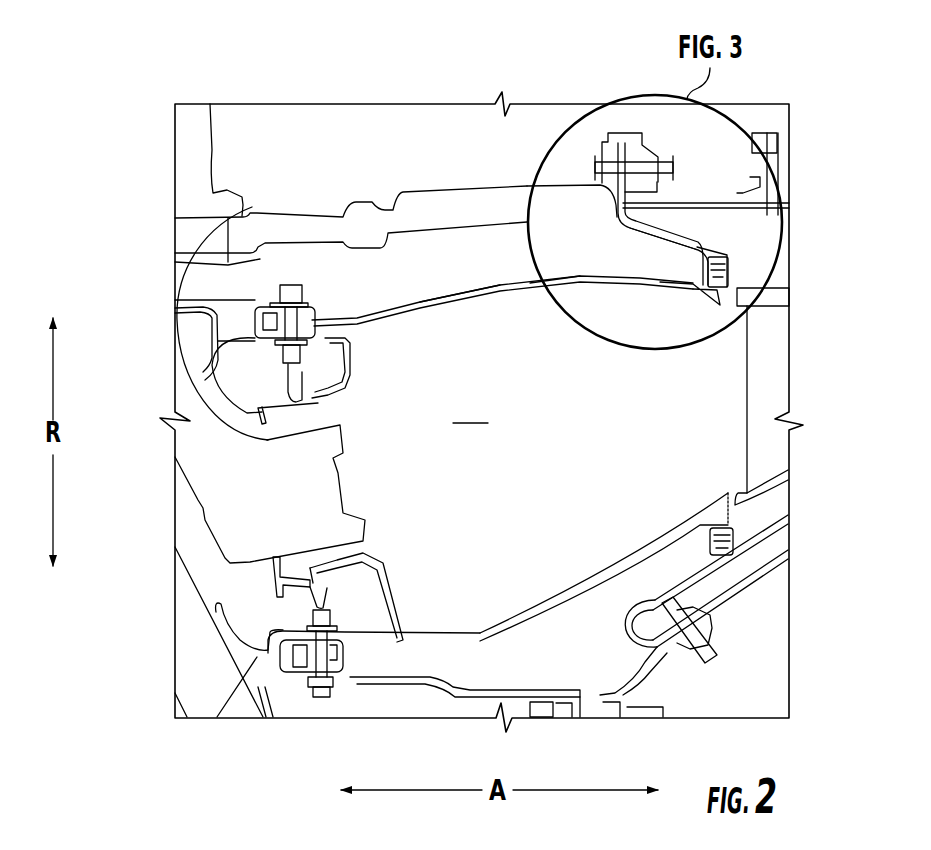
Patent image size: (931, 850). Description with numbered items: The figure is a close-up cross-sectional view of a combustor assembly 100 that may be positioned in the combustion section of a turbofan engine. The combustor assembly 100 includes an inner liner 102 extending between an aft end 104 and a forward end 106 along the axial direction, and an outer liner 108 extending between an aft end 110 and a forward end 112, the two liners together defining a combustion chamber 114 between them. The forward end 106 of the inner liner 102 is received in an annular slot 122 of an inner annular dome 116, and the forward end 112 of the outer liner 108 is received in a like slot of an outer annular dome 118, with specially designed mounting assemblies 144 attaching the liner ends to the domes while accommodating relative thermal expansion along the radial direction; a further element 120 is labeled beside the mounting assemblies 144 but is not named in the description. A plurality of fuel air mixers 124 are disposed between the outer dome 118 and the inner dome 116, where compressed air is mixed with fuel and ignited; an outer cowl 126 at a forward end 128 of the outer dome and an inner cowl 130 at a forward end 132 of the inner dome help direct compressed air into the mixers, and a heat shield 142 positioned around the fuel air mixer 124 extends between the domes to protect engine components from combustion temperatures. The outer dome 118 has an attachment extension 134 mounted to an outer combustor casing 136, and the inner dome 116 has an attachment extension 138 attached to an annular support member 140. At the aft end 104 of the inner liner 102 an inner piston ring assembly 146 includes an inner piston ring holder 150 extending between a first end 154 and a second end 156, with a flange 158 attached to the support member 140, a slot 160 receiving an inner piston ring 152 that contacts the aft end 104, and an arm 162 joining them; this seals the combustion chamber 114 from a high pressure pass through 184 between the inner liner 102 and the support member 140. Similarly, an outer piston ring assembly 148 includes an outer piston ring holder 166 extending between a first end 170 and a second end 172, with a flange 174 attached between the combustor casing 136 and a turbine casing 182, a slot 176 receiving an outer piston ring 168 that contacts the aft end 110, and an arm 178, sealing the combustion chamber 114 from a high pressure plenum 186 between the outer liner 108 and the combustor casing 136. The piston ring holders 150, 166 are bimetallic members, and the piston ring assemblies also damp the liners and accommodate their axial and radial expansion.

The combustor assembly 100 is at (447, 246).
The inner liner 102 is at (530, 617).
The aft end 104 is at (693, 489).
The forward end 106 is at (301, 670).
The outer liner 108 is at (560, 290).
The aft end 110 is at (697, 312).
The forward end 112 is at (258, 301).
The combustion chamber 114 is at (470, 409).
The inner annular dome 116 is at (227, 635).
The outer annular dome 118 is at (220, 341).
The bracket body 120 is at (318, 322).
The annular slot 122 is at (295, 312).
The fuel air mixer 124 is at (223, 507).
The outer cowl 126 is at (213, 377).
The forward end 128 is at (192, 331).
The inner cowl 130 is at (226, 638).
The forward end 132 is at (207, 667).
The attachment extension 134 is at (190, 305).
The outer combustor casing 136 is at (358, 216).
The attachment extension 138 is at (452, 686).
The annular support member 140 is at (647, 683).
The heat shield 142 is at (350, 370).
The mounting assembly 144 is at (292, 281).
The inner piston ring assembly 146 is at (711, 583).
The outer piston ring assembly 148 is at (576, 236).
The inner piston ring holder 150 is at (614, 621).
The inner piston ring 152 is at (733, 528).
The first end 154 is at (633, 660).
The second end 156 is at (699, 543).
The flange 158 is at (677, 648).
The slot 160 is at (735, 547).
The arm 162 is at (657, 585).
The outer piston ring holder 166 is at (609, 220).
The outer piston ring 168 is at (728, 275).
The first end 170 is at (557, 298).
The second end 172 is at (661, 257).
The flange 174 is at (645, 147).
The slot 176 is at (690, 263).
The arm 178 is at (672, 218).
The turbine casing 182 is at (725, 197).
The high pressure pass through 184 is at (486, 660).
The high pressure plenum 186 is at (491, 257).